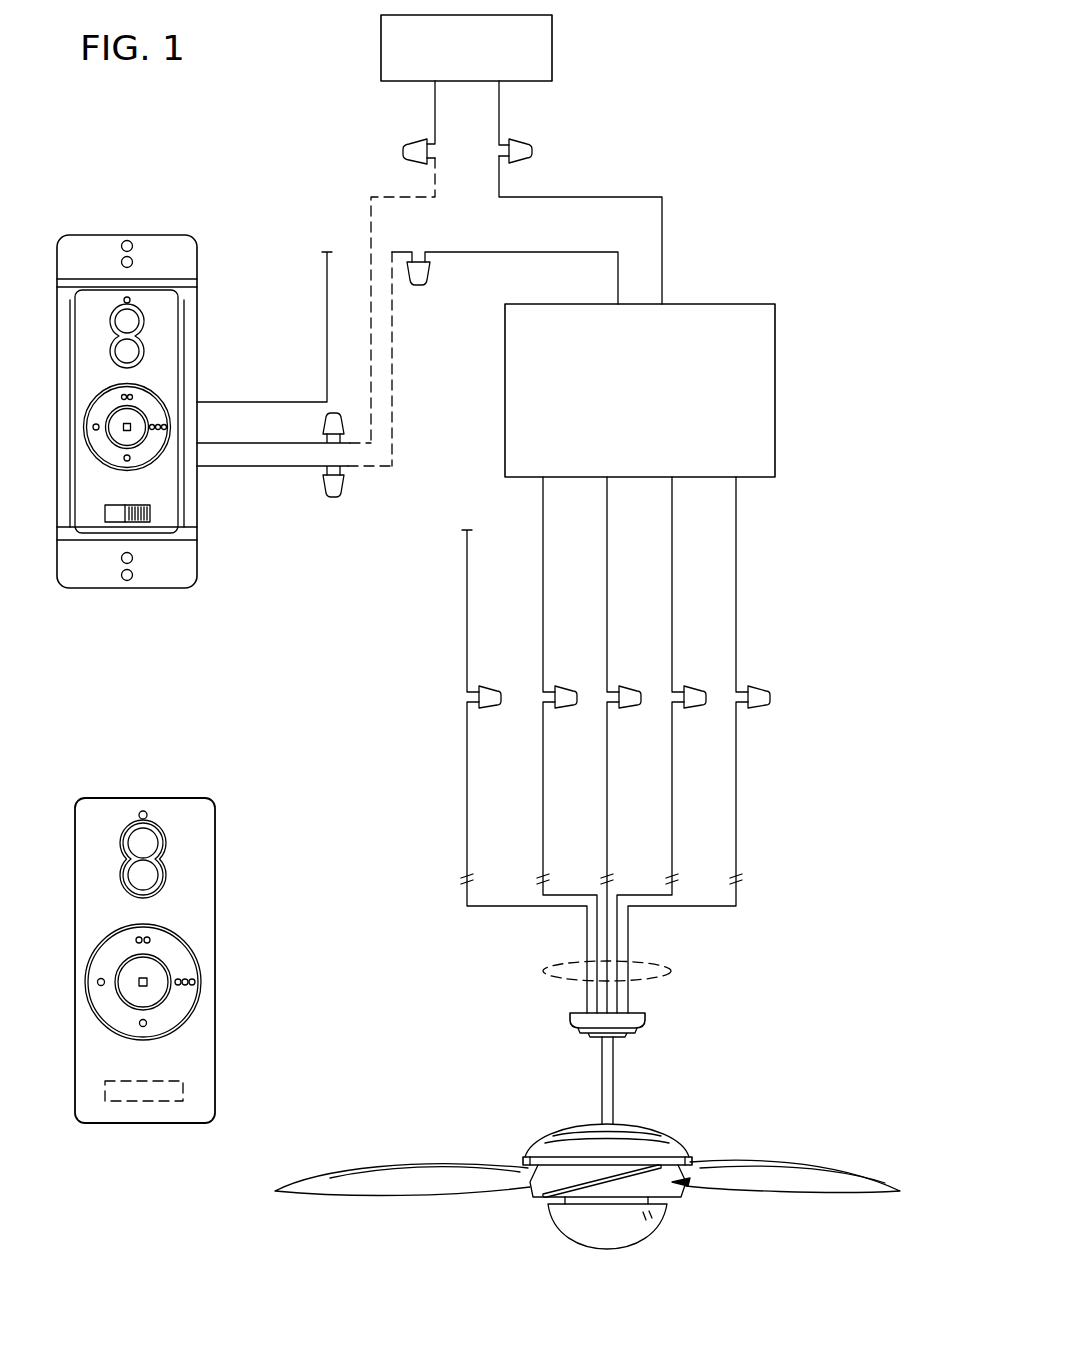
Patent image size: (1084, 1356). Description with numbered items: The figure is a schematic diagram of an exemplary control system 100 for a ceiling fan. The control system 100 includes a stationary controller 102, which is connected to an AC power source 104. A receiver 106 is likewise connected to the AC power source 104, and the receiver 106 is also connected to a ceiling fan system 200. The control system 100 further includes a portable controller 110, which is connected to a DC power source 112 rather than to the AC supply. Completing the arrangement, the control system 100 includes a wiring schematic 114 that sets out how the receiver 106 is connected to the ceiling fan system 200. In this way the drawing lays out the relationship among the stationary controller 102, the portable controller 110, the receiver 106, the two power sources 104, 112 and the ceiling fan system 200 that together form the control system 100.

The control system 100 is at (719, 146).
The stationary controller 102 is at (116, 230).
The AC power source 104 is at (381, 48).
The receiver 106 is at (658, 426).
The portable controller 110 is at (128, 792).
The DC power source 112 is at (143, 1101).
The wiring schematic 114 is at (673, 971).
The ceiling fan system 200 is at (662, 1087).